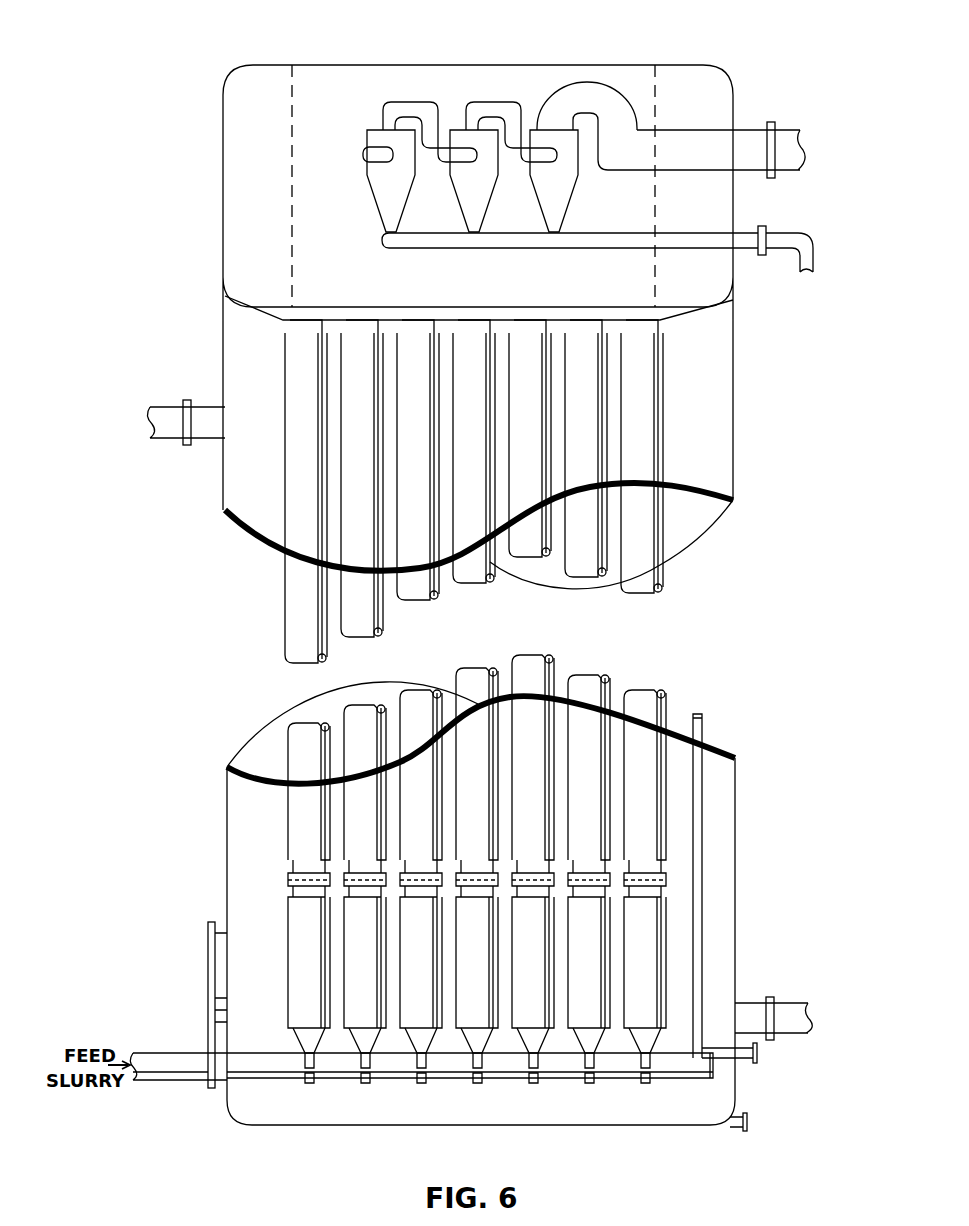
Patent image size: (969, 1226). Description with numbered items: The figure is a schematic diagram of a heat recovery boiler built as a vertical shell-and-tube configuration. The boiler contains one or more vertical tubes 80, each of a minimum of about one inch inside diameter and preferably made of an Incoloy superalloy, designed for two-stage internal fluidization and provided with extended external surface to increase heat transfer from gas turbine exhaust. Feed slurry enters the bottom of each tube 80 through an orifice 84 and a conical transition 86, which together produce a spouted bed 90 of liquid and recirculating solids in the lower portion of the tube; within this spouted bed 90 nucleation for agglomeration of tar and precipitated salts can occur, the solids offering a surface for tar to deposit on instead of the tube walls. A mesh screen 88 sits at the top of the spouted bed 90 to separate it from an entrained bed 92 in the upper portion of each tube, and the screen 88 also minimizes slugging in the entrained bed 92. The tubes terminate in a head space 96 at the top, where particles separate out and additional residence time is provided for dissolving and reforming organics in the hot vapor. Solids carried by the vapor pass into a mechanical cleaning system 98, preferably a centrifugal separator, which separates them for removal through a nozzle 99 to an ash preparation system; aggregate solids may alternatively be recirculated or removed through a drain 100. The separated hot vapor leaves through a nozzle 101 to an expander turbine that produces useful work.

The vertical tube 80 is at (640, 808).
The orifice 84 is at (648, 1063).
The conical transition 86 is at (655, 1043).
The mesh screen 88 is at (662, 881).
The spouted bed 90 is at (685, 950).
The entrained bed 92 is at (290, 590).
The head space 96 is at (245, 150).
The mechanical cleaning system 98 is at (380, 135).
The nozzle 99 is at (790, 232).
The drain 100 is at (782, 1010).
The nozzle 101 is at (786, 135).